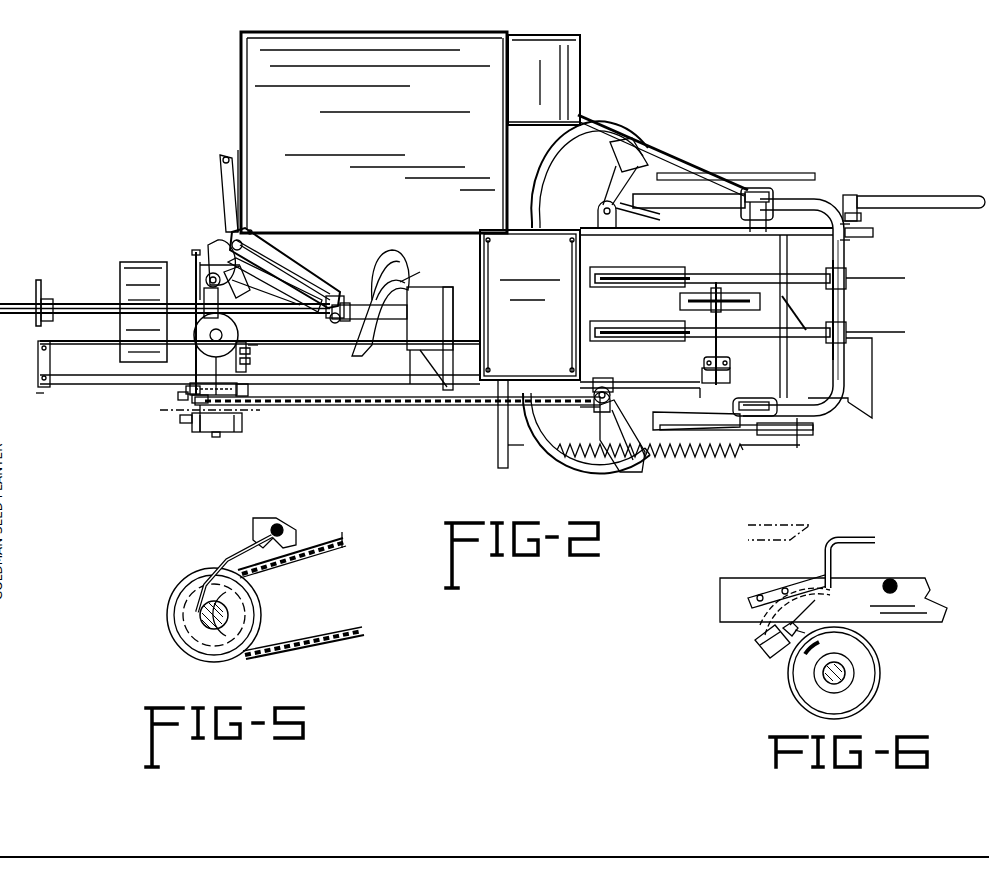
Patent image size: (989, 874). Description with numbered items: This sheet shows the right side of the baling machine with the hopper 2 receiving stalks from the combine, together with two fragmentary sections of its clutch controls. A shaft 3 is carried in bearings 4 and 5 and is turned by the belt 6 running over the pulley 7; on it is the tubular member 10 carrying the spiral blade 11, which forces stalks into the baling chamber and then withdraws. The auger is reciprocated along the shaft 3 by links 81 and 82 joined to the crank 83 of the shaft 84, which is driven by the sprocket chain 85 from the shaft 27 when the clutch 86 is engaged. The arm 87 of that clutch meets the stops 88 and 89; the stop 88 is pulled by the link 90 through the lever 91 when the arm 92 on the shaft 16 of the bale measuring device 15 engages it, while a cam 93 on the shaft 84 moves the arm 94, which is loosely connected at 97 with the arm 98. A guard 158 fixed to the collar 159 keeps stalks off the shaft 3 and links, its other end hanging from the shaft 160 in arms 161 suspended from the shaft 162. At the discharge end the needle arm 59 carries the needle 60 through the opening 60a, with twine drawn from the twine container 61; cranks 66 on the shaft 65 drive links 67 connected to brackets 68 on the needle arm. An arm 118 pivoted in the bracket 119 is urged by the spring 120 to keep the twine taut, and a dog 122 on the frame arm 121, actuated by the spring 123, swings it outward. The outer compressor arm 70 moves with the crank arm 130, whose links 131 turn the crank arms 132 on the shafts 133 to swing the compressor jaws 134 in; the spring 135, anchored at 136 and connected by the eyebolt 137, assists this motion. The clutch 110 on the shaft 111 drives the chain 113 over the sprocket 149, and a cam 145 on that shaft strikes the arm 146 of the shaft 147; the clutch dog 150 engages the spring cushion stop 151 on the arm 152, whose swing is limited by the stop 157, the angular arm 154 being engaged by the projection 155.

In FIG. 2, the hopper 2 is at (390, 296).
In FIG. 2, the shaft 3 is at (100, 303).
In FIG. 2, the bearing 4 is at (44, 299).
In FIG. 2, the bearing 5 is at (186, 390).
In FIG. 2, the belt 6 is at (270, 408).
In FIG. 2, the pulley 7 is at (140, 262).
In FIG. 2, the tubular member 10 is at (356, 305).
In FIG. 2, the spiral blade 11 is at (427, 269).
In FIG. 2, the bale measuring device 15 is at (760, 308).
In FIG. 2, the shaft 16 is at (702, 378).
In FIG. 2, the shaft 27 is at (222, 358).
In FIG. 2, the needle arm 59 is at (845, 305).
In FIG. 2, the needle 60 is at (742, 274).
In FIG. 2, the opening 60a is at (600, 268).
In FIG. 2, the twine container 61 is at (568, 76).
In FIG. 2, the shaft 65 is at (592, 390).
In FIG. 2, the crank arm 66 is at (632, 208).
In FIG. 2, the links 67 is at (697, 193).
In FIG. 2, the brackets 68 is at (808, 199).
In FIG. 2, the outer compressor arm 70 is at (905, 280).
In FIG. 2, the link 81 is at (272, 290).
In FIG. 2, the link 82 is at (300, 272).
In FIG. 2, the crank 83 is at (240, 280).
In FIG. 2, the shaft 84 is at (200, 268).
In FIG. 2, the sprocket chain 85 is at (206, 290).
In FIG. 2, the clutch 86 is at (242, 360).
In FIG. 2, the arm 87 is at (250, 352).
In FIG. 2, the stop 88 is at (258, 342).
In FIG. 2, the stop arm 89 is at (196, 333).
In FIG. 2, the link 90 is at (416, 340).
In FIG. 2, the lever 91 is at (726, 360).
In FIG. 2, the arm 92 is at (712, 340).
In FIG. 2, the cam 93 is at (214, 248).
In FIG. 2, the arm 94 is at (192, 250).
In FIG. 2, the loose connection 97 is at (190, 400).
In FIG. 2, the arm 98 is at (180, 395).
In FIG. 2, the clutch 110 is at (222, 437).
In FIG. 6, the clutch 110 is at (875, 669).
In FIG. 2, the shaft 111 is at (217, 438).
In FIG. 5, the shaft 111 is at (231, 611).
In FIG. 6, the shaft 111 is at (842, 679).
In FIG. 2, the chain 113 is at (412, 406).
In FIG. 5, the chain 113 is at (346, 544).
In FIG. 2, the arm 118 is at (885, 196).
In FIG. 2, the bracket 119 is at (850, 195).
In FIG. 2, the spring 120 is at (862, 217).
In FIG. 2, the arm 121 is at (803, 232).
In FIG. 2, the dog 122 is at (850, 240).
In FIG. 2, the spring 123 is at (873, 234).
In FIG. 2, the crank arm 130 is at (775, 190).
In FIG. 2, the links 131 is at (733, 173).
In FIG. 2, the crank arm 132 is at (646, 172).
In FIG. 2, the shaft 133 is at (600, 208).
In FIG. 2, the compressor jaw 134 is at (580, 160).
In FIG. 2, the spring 135 is at (668, 460).
In FIG. 2, the frame element anchor 136 is at (503, 460).
In FIG. 2, the eyebolt 137 is at (800, 440).
In FIG. 2, the cam 145 is at (202, 434).
In FIG. 5, the cam 145 is at (185, 652).
In FIG. 5, the arm 146 is at (258, 542).
In FIG. 2, the shaft 147 is at (244, 398).
In FIG. 5, the shaft 147 is at (283, 530).
In FIG. 6, the shaft 147 is at (895, 582).
In FIG. 5, the sprocket 149 is at (262, 636).
In FIG. 2, the dog 150 is at (194, 432).
In FIG. 6, the dog 150 is at (812, 620).
In FIG. 6, the spring cushion stop 151 is at (790, 640).
In FIG. 2, the arm 152 is at (182, 422).
In FIG. 6, the arm 152 is at (758, 635).
In FIG. 6, the angular arm 154 is at (855, 538).
In FIG. 6, the projection 155 is at (786, 525).
In FIG. 6, the stop 157 is at (795, 578).
In FIG. 2, the guard 158 is at (318, 270).
In FIG. 2, the collar 159 is at (322, 316).
In FIG. 2, the shaft 160 is at (240, 240).
In FIG. 2, the arms 161 is at (222, 198).
In FIG. 2, the shaft 162 is at (226, 170).